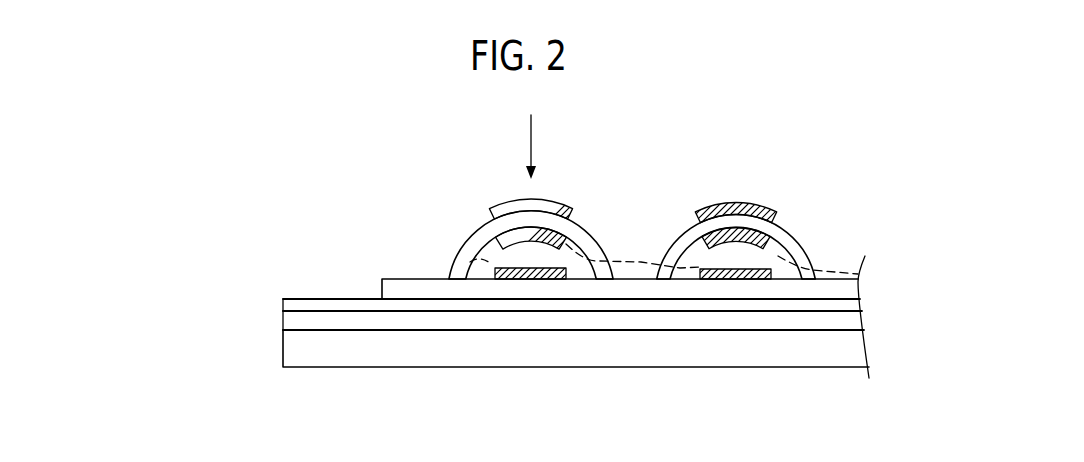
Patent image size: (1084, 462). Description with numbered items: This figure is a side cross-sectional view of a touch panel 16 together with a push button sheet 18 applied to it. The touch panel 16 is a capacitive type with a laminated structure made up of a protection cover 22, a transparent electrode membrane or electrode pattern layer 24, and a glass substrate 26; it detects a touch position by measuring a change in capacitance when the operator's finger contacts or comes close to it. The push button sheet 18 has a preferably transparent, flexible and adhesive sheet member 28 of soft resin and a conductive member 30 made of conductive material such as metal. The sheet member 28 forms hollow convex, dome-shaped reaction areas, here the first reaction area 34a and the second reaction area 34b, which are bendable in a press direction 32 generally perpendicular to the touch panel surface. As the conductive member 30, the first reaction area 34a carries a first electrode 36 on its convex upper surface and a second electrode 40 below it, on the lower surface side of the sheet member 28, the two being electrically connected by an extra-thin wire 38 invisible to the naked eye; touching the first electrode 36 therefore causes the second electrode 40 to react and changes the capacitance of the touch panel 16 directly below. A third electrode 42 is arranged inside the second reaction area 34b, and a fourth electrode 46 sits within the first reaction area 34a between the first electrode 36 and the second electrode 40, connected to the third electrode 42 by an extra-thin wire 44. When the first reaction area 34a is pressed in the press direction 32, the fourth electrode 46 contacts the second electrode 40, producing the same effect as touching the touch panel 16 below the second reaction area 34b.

The touch panel 16 is at (515, 320).
The protection cover 22 is at (283, 302).
The transparent electrode membrane or electrode pattern layer 24 is at (283, 320).
The glass substrate 26 is at (539, 356).
The push button sheet 18 is at (569, 250).
The sheet member 28 is at (405, 279).
The conductive member 30 is at (618, 199).
The first electrode 36 is at (497, 210).
The fourth electrode 46 is at (500, 233).
The second electrode 40 is at (489, 269).
The press direction 32 is at (533, 142).
The first reaction area 34a is at (587, 207).
The second reaction area 34b is at (807, 212).
The extra-thin wire 44 is at (641, 265).
The extra-thin wire 38 is at (468, 266).
The third electrode 42 is at (732, 281).